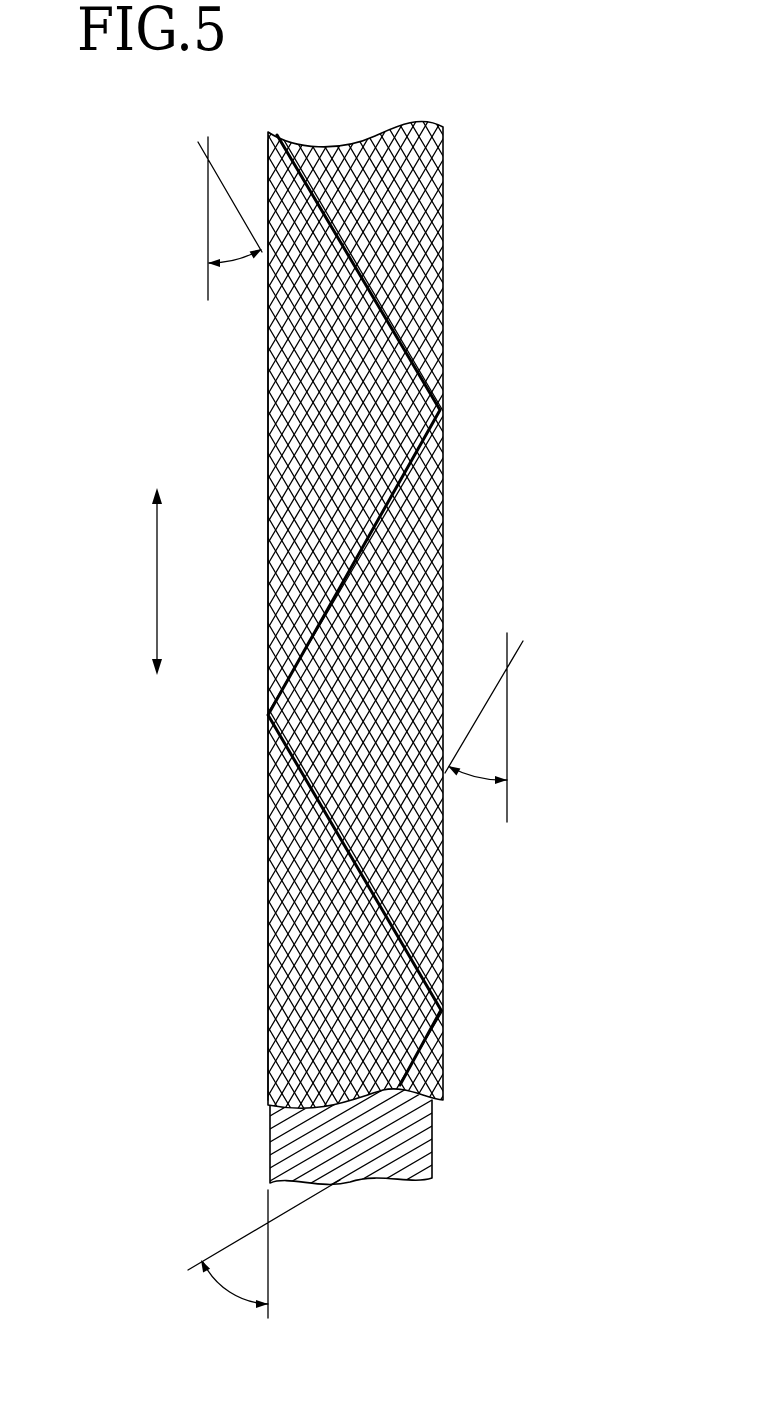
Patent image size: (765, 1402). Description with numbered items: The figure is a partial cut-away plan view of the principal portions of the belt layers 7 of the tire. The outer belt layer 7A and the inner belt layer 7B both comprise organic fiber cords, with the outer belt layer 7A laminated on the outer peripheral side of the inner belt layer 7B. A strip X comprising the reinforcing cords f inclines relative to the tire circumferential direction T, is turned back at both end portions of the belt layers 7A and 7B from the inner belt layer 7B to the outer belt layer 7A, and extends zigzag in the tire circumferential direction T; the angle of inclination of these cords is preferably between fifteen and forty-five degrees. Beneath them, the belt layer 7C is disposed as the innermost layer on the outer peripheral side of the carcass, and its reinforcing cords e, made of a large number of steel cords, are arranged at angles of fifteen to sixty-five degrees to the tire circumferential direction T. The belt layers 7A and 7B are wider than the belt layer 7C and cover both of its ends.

The belt layers 7 is at (450, 341).
The outer belt layer 7A is at (430, 198).
The inner belt layer 7B is at (413, 542).
The belt layer 7C is at (432, 1135).
The reinforcing cords f is at (393, 417).
The reinforcing cords e is at (400, 1130).
The strip X is at (268, 395).
The tire circumferential direction T is at (143, 581).